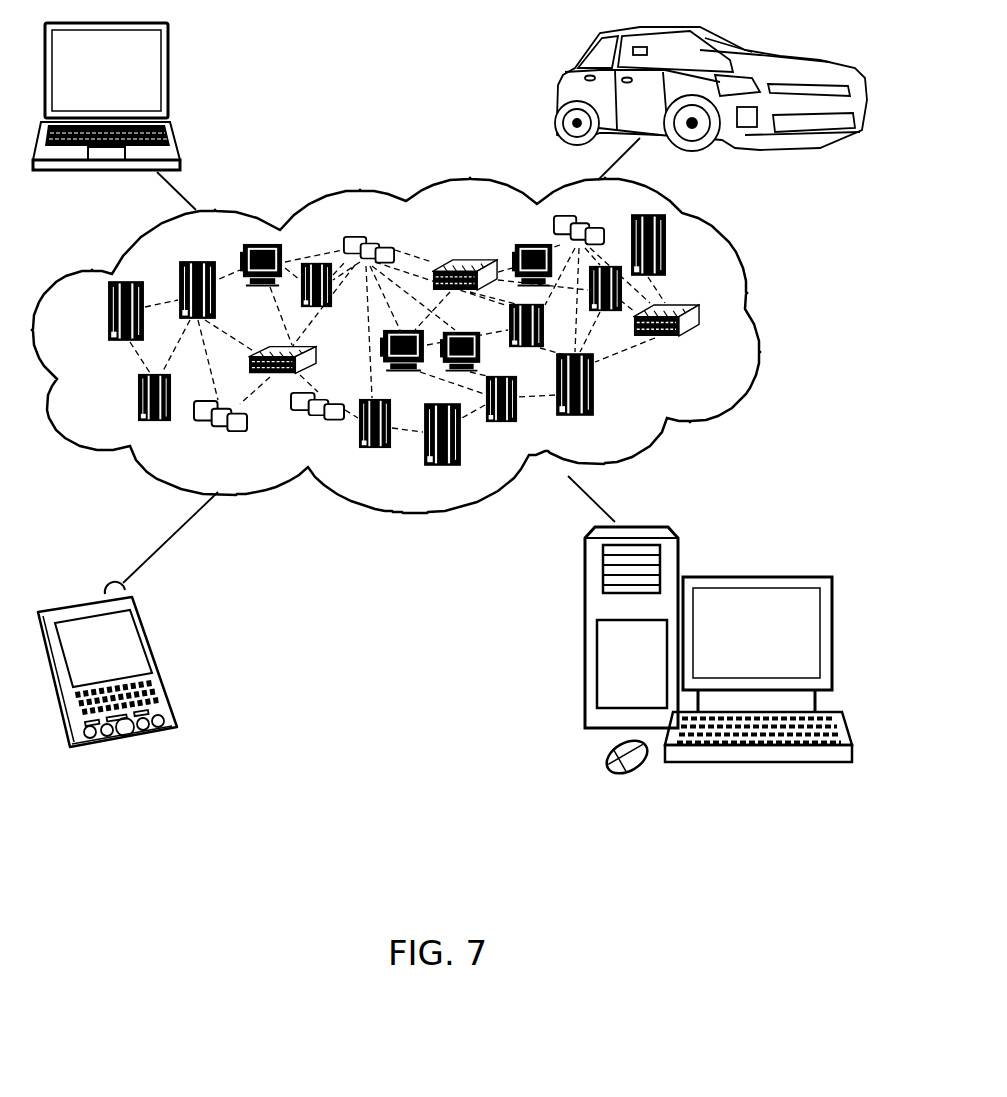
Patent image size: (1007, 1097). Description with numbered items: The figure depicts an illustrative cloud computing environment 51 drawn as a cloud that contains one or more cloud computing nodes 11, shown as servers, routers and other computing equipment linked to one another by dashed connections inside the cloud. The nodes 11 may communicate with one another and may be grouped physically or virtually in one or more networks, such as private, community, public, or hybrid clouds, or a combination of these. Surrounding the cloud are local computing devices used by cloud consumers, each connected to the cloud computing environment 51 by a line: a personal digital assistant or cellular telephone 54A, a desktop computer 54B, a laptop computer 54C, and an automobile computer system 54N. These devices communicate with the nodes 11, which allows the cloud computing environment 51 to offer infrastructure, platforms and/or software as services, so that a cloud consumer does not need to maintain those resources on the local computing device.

The cloud computing node 11 is at (712, 348).
The cloud computing environment 51 is at (758, 321).
The personal digital assistant (PDA) or cellular telephone 54A is at (163, 660).
The desktop computer 54B is at (753, 575).
The laptop computer 54C is at (168, 78).
The automobile computer system 54N is at (558, 92).